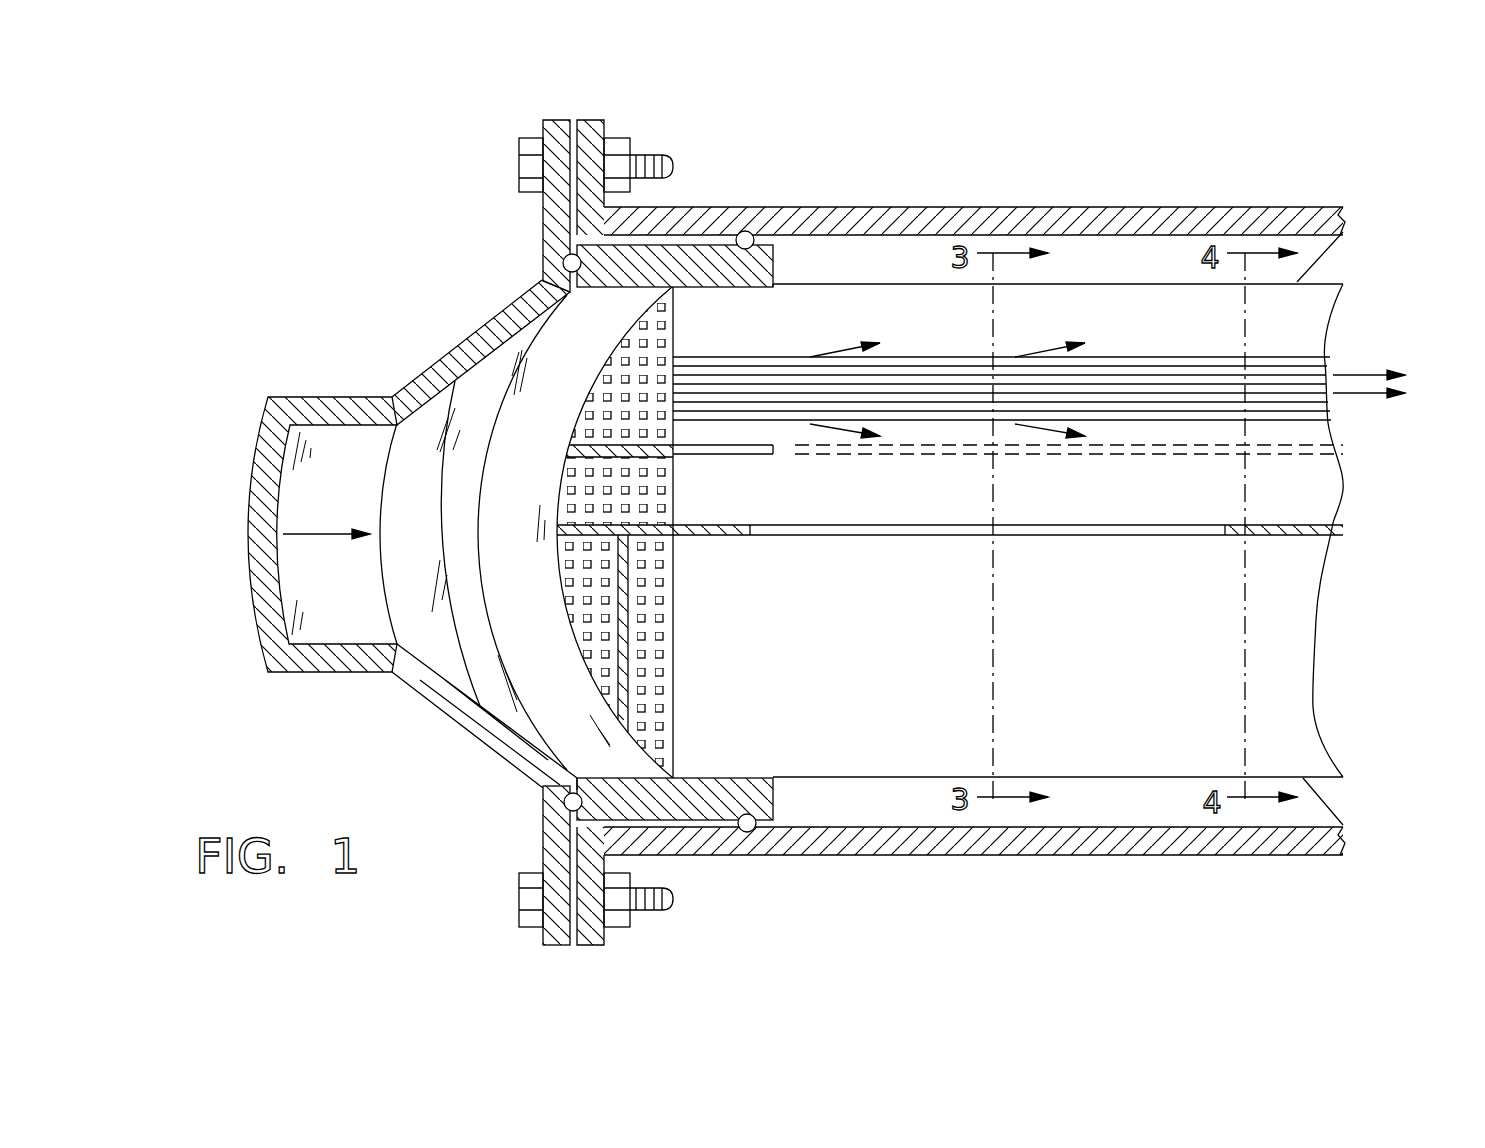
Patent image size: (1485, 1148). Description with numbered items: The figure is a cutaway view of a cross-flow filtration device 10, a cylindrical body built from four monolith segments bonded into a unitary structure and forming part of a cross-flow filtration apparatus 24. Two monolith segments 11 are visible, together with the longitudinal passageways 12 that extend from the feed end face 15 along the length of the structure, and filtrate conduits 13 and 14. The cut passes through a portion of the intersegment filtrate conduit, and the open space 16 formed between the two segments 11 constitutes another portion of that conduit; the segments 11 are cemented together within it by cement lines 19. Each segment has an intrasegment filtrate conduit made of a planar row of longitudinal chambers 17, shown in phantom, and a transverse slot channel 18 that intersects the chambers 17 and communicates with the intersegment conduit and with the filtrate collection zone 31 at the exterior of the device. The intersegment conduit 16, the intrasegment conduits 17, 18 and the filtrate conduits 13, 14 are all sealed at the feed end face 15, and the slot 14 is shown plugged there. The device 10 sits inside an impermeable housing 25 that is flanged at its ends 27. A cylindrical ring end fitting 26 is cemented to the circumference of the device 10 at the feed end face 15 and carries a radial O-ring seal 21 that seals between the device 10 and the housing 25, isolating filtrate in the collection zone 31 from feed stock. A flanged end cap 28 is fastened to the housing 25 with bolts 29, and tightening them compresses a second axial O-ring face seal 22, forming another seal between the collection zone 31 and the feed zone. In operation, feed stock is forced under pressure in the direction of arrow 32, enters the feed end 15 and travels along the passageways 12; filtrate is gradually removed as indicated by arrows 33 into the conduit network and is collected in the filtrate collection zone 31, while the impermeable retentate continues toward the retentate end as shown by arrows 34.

The cross-flow filtration device 10 is at (1343, 339).
The monolith segments 11 is at (1302, 322).
The passageways 12 is at (790, 358).
The intersegment filtrate conduit plugged portion 13 is at (647, 525).
The intrasegment filtrate conduit slot 14 is at (600, 450).
The feed end face 15 is at (603, 372).
The intersegment filtrate conduit open space 16 is at (822, 536).
The longitudinal chambers 17 is at (1157, 455).
The transverse slot channel 18 is at (703, 450).
The cement lines 19 is at (703, 537).
The radial O-ring seal 21 is at (750, 234).
The axial O-ring face seal 22 is at (566, 257).
The cross-flow filtration apparatus 24 is at (345, 252).
The impermeable housing 25 is at (1002, 195).
The cylindrical ring end fitting 26 is at (487, 400).
The flanged ends 27 is at (588, 128).
The flanged end cap 28 is at (383, 390).
The bolts 29 is at (673, 166).
The filtrate collection zone 31 is at (1168, 247).
The feed stock flow arrow 32 is at (326, 520).
The filtrate flow arrows 33 is at (968, 387).
The retentate flow arrows 34 is at (1369, 369).